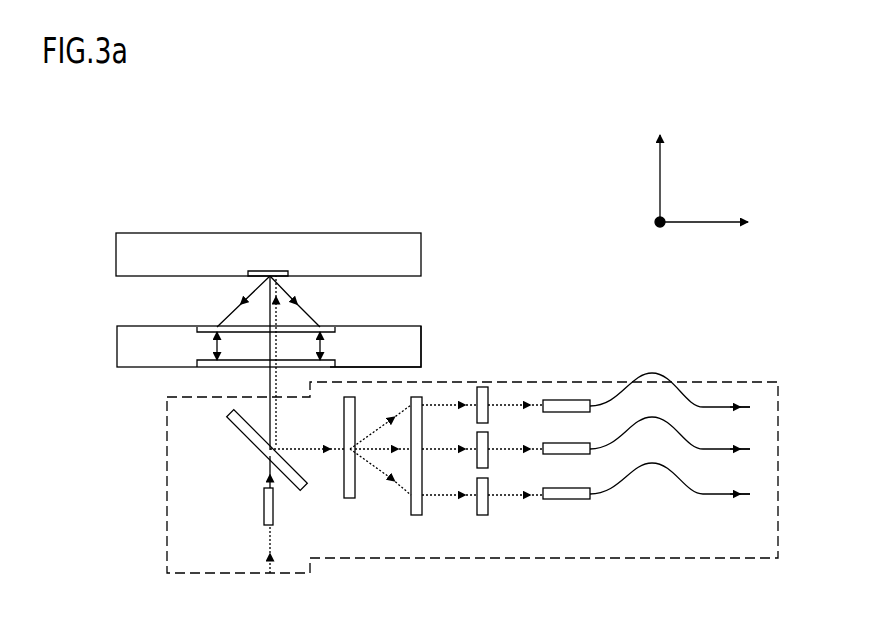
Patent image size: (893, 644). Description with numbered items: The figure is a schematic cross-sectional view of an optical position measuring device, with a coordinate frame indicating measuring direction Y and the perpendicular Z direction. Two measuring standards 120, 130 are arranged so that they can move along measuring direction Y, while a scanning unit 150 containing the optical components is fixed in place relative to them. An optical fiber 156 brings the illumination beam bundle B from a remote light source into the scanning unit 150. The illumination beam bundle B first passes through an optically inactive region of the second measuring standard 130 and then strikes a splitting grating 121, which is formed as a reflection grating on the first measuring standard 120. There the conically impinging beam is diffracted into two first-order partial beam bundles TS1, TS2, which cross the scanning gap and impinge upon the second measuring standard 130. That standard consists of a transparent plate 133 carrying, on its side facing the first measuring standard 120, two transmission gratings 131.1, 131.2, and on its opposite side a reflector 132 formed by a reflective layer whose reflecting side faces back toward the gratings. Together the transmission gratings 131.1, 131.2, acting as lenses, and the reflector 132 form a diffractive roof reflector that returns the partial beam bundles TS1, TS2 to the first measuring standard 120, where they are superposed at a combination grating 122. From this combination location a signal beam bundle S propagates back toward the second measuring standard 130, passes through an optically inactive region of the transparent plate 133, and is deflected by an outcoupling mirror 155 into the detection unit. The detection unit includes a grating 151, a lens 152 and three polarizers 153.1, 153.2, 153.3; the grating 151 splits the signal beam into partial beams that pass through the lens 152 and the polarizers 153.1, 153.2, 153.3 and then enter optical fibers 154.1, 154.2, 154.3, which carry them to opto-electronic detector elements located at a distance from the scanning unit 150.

The first measuring standard 120 is at (107, 253).
The splitting grating 121 is at (276, 271).
The combination grating 122 is at (312, 203).
The second measuring standard 130 is at (107, 343).
The transmission grating 131.1 is at (340, 327).
The transmission grating 131.2 is at (404, 328).
The reflector 132 is at (210, 361).
The transparent plate 133 is at (400, 352).
The scanning unit 150 is at (167, 548).
The grating 151 is at (352, 500).
The lens 152 is at (421, 516).
The polarizer 153.1 is at (487, 390).
The polarizer 153.2 is at (489, 436).
The polarizer 153.3 is at (489, 506).
The optical fiber 154.1 is at (590, 404).
The optical fiber 154.2 is at (582, 449).
The optical fiber 154.3 is at (573, 493).
The outcoupling mirror 155 is at (258, 452).
The optical fiber 156 is at (262, 500).
The partial beam bundle TS1 is at (243, 300).
The partial beam bundle TS2 is at (290, 300).
The illumination beam bundle B is at (268, 410).
The signal beam bundle S is at (278, 449).
The z-direction Z is at (668, 163).
The measuring direction Y is at (712, 225).